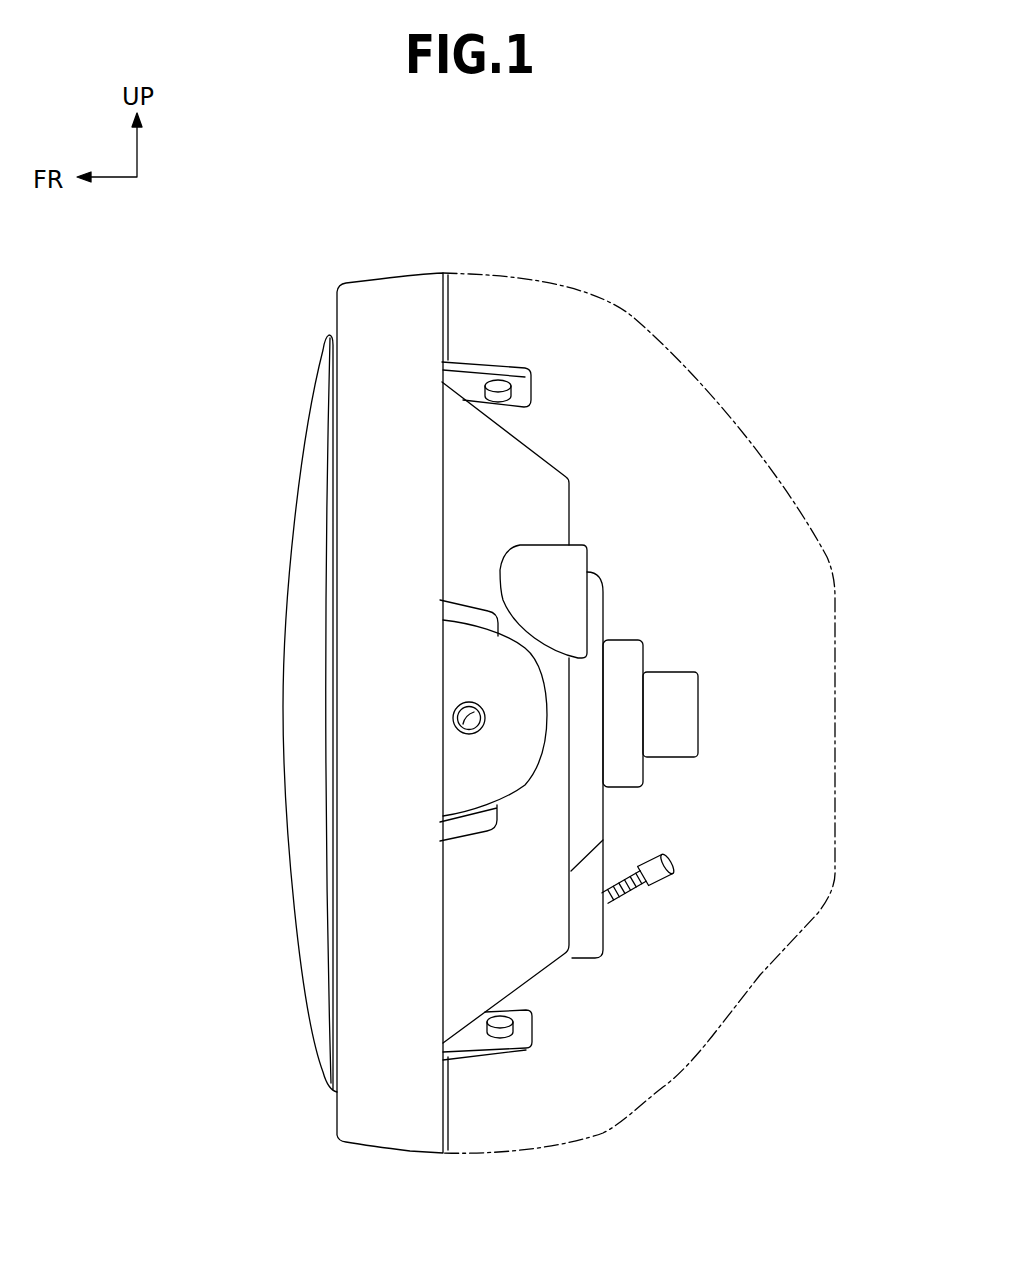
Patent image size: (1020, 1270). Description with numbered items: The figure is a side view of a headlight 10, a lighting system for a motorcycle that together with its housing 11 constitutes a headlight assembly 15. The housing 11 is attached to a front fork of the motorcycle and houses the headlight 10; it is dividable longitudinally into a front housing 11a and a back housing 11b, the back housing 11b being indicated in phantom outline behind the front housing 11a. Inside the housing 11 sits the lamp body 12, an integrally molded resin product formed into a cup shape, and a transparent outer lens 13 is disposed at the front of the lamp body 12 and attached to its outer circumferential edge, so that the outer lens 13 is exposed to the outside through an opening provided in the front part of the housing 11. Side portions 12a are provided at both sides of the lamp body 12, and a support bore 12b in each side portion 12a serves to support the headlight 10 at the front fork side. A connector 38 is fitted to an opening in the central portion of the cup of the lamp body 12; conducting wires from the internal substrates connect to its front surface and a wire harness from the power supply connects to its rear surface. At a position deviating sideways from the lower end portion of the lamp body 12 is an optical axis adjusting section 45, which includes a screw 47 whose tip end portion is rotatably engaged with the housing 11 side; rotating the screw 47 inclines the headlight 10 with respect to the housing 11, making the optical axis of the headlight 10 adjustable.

The headlight 10 is at (212, 486).
The headlight assembly 15 is at (256, 293).
The housing 11 is at (375, 268).
The front housing 11a is at (418, 297).
The back housing 11b is at (572, 284).
The lamp body 12 is at (578, 478).
The side portion 12a is at (507, 685).
The support bore 12b is at (480, 718).
The outer lens 13 is at (303, 708).
The connector 38 is at (667, 758).
The optical axis adjusting section 45 is at (675, 894).
The screw 47 is at (628, 897).